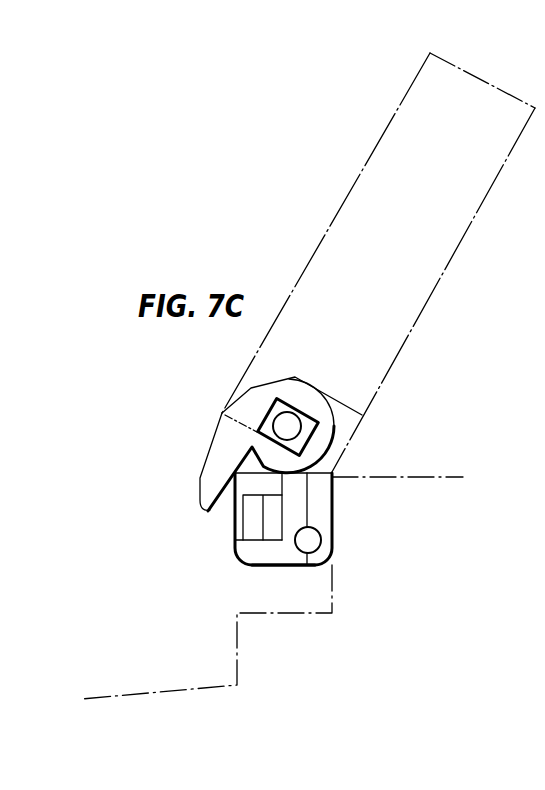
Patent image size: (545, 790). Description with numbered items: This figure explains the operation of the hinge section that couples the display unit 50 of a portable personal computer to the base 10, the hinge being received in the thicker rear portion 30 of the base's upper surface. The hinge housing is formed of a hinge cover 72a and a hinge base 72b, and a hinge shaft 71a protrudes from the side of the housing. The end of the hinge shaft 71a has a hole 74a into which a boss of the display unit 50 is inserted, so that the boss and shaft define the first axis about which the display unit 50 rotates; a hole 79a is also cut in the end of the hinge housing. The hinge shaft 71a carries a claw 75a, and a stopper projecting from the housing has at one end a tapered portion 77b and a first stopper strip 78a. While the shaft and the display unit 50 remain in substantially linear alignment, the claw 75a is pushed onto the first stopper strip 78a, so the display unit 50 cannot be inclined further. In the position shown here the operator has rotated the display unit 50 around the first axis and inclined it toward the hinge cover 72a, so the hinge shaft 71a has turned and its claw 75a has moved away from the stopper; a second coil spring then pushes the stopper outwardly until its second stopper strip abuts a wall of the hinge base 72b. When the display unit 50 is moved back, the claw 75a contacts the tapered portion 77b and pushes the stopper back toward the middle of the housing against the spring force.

The base 10 is at (157, 688).
The rear portion 30 is at (438, 475).
The display unit 50 is at (338, 212).
The hinge shaft 71a is at (362, 415).
The hinge cover 72a is at (337, 565).
The hinge base 72b is at (255, 564).
The hole 74a is at (288, 424).
The claw 75a is at (213, 468).
The tapered portion 77b is at (253, 525).
The first stopper strip 78a is at (273, 541).
The hole 79a is at (318, 540).